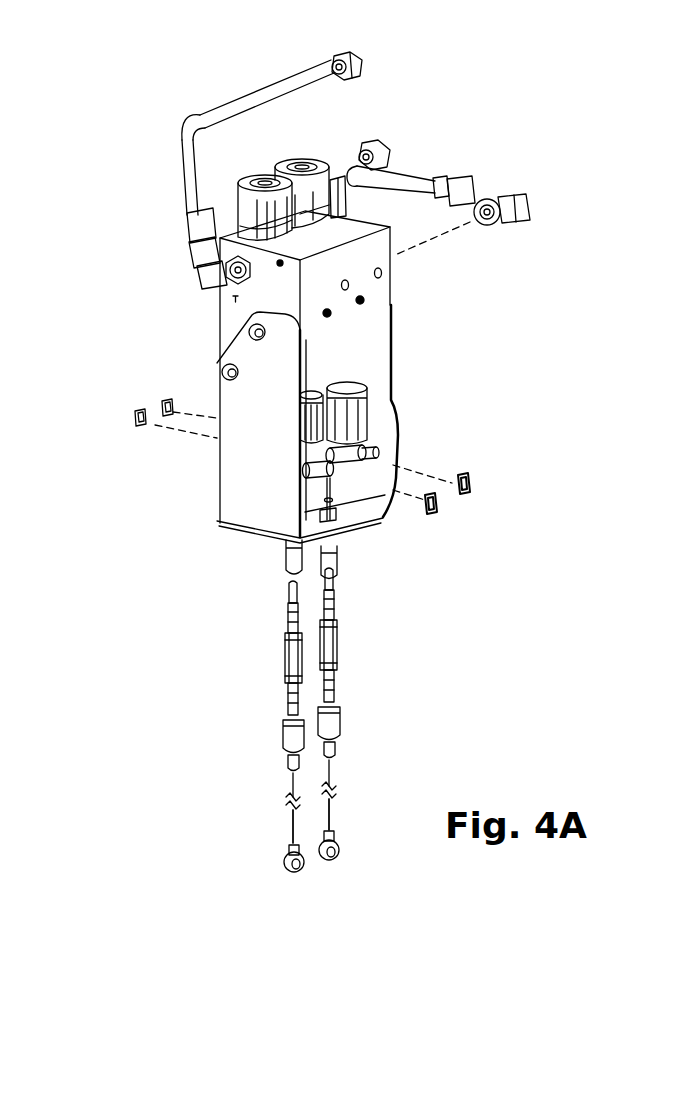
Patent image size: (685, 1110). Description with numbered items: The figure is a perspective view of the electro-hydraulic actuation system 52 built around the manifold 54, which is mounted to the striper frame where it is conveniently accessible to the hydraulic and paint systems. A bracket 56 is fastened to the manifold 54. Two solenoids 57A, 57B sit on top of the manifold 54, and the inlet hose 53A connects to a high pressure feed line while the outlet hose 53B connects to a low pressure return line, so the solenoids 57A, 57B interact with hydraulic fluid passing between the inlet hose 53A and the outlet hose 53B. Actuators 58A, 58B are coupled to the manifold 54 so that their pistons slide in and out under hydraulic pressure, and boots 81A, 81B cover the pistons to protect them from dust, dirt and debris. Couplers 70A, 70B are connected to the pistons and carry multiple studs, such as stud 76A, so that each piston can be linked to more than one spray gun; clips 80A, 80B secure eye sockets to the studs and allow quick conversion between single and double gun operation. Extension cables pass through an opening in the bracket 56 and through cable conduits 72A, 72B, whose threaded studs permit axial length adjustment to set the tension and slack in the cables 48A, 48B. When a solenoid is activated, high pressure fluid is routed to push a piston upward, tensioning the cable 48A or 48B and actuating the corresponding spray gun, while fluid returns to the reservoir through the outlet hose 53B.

The electro-hydraulic actuation system 52 is at (560, 310).
The manifold 54 is at (380, 347).
The bracket 56 is at (217, 498).
The solenoid 57A is at (284, 153).
The solenoid 57B is at (245, 167).
The inlet hose 53A is at (412, 180).
The outlet hose 53B is at (287, 82).
The actuator 58A is at (360, 393).
The actuator 58B is at (300, 400).
The boot 81A is at (352, 440).
The boot 81B is at (322, 465).
The stud 76A is at (380, 452).
The clip 80A is at (473, 487).
The clip 80B is at (158, 402).
The coupler 70A is at (345, 520).
The coupler 70B is at (330, 550).
The cable conduit 72A is at (343, 650).
The cable conduit 72B is at (280, 664).
The cable 48A is at (330, 817).
The cable 48B is at (293, 823).